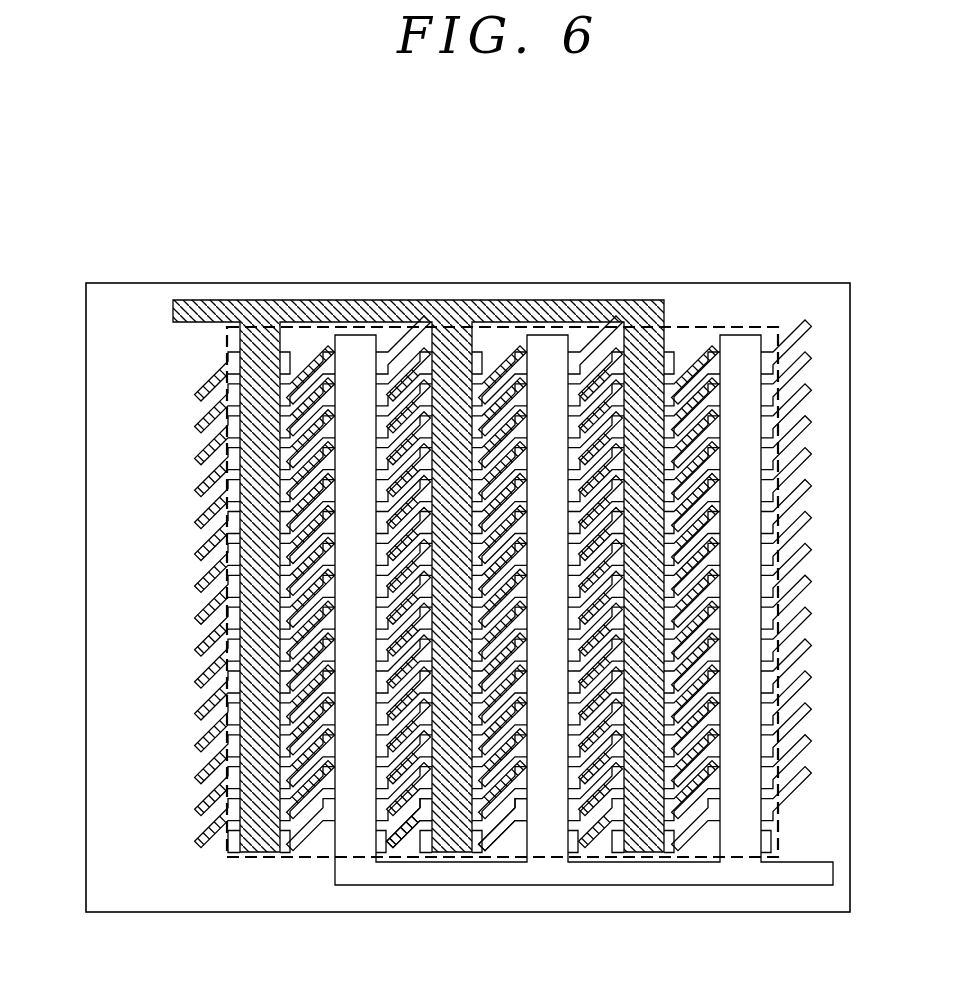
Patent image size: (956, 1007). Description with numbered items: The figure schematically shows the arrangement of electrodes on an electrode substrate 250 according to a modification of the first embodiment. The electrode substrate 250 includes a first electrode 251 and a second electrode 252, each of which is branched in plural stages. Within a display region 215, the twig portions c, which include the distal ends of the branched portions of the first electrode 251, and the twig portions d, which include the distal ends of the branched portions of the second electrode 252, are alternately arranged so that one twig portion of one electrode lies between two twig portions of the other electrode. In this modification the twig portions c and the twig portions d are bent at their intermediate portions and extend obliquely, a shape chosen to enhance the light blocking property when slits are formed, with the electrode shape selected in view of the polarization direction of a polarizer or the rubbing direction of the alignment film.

The electrode substrate 250 is at (475, 235).
The first electrode 251 is at (258, 298).
The second electrode 252 is at (740, 350).
The display region 215 is at (285, 858).
The twig portions of the first electrode c is at (400, 836).
The twig portions of the second electrode d is at (486, 832).